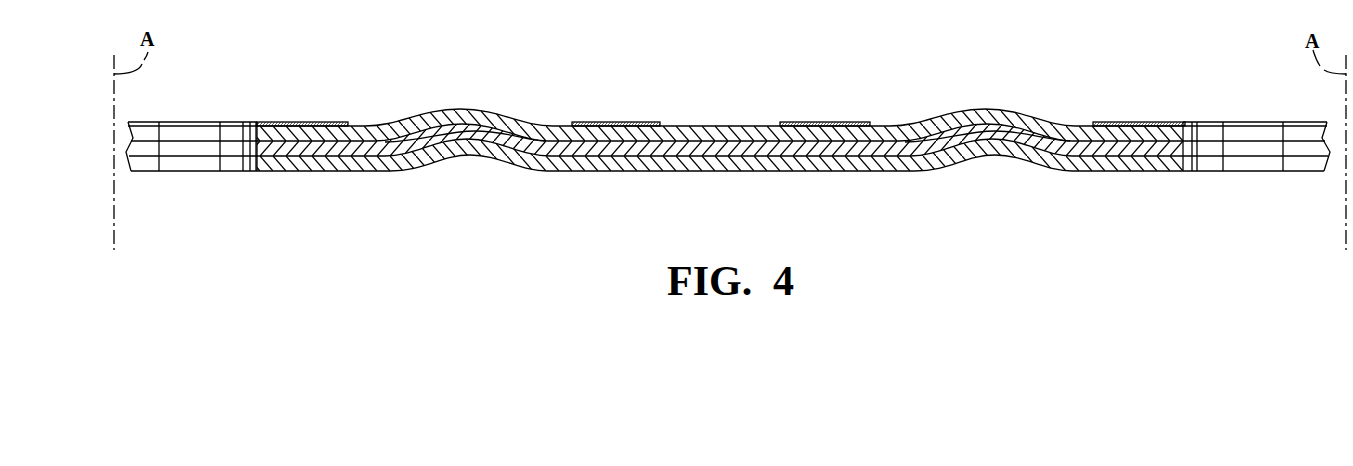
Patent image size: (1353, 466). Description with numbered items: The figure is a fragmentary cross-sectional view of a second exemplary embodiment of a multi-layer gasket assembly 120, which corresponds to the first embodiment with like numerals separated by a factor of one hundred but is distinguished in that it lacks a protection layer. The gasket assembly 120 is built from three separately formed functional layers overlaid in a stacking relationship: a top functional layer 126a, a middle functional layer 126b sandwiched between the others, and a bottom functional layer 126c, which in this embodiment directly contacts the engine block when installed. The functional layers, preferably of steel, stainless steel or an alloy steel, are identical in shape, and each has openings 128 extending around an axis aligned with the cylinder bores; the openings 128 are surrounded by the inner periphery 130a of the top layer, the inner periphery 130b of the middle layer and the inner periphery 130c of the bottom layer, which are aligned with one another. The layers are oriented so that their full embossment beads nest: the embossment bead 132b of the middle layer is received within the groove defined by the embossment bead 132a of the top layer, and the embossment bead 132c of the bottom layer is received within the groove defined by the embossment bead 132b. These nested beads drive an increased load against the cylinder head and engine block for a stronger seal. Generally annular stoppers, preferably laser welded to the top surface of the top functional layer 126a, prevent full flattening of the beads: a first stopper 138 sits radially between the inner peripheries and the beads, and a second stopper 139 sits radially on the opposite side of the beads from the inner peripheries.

The multi-layer gasket assembly 120 is at (721, 112).
The top functional layer 126a is at (693, 131).
The middle functional layer 126b is at (707, 145).
The bottom functional layer 126c is at (672, 160).
The openings 128 is at (187, 150).
The inner periphery of the top functional layer 130a is at (258, 130).
The inner periphery of the middle functional layer 130b is at (256, 147).
The inner periphery of the bottom functional layer 130c is at (256, 170).
The embossment bead of the top functional layer 132a is at (458, 117).
The embossment bead of the middle functional layer 132b is at (455, 133).
The embossment bead of the bottom functional layer 132c is at (462, 148).
The first stopper 138 is at (297, 121).
The second stopper 139 is at (613, 121).